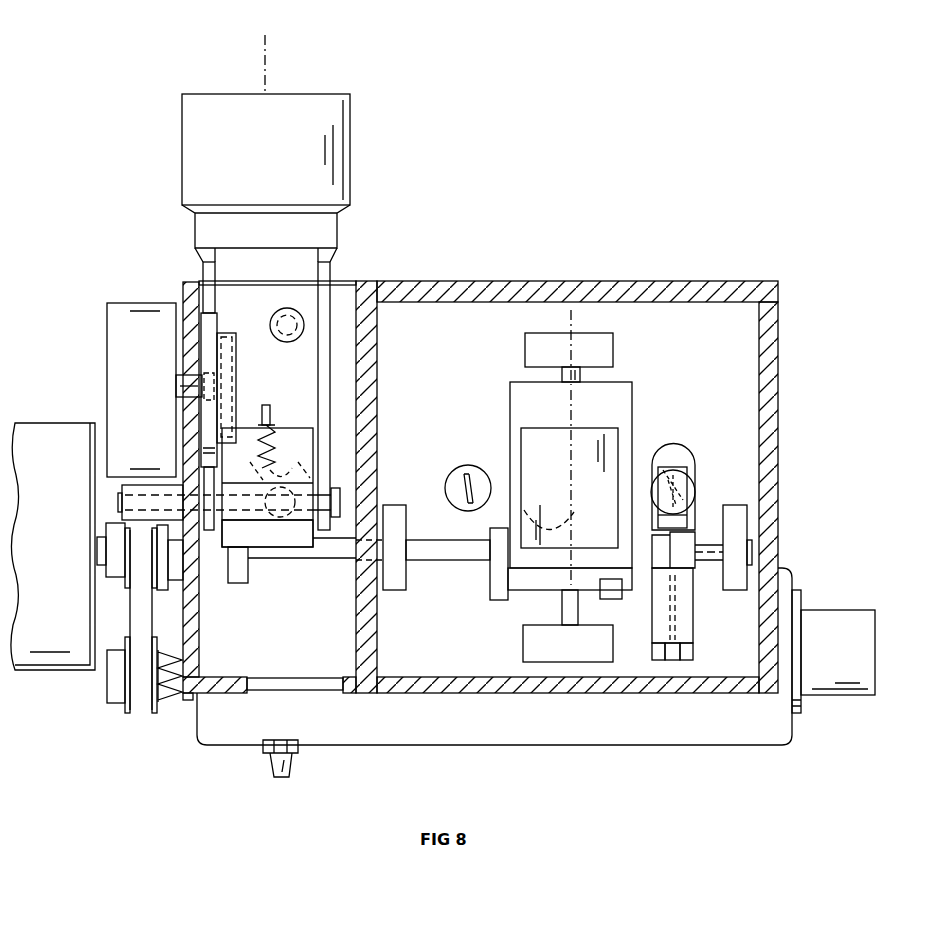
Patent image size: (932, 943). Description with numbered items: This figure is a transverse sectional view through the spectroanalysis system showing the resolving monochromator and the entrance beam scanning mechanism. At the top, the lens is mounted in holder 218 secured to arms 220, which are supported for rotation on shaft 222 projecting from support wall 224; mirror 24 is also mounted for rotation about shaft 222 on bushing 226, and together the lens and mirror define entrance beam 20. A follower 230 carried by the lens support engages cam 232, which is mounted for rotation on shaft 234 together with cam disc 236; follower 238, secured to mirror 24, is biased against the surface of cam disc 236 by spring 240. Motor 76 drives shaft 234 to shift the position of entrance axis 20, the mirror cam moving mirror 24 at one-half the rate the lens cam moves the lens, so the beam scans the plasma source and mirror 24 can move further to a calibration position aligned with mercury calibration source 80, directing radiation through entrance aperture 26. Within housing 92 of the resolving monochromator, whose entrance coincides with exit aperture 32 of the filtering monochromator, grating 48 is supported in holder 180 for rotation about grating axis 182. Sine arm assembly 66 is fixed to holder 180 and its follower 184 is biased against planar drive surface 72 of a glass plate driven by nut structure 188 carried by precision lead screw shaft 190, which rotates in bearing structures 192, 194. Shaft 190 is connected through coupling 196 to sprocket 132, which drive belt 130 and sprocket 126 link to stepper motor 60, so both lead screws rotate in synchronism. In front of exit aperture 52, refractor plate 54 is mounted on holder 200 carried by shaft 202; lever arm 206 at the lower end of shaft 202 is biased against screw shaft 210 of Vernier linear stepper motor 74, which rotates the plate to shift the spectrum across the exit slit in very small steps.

The entrance beam 20 is at (265, 82).
The holder 218 is at (352, 142).
The mercury calibration source 80 is at (284, 308).
The arms 220 is at (326, 302).
The motor 76 is at (107, 375).
The cam 232 is at (208, 355).
The cam disc 236 is at (240, 350).
The follower 238 is at (231, 385).
The shaft 234 is at (190, 388).
The follower 230 is at (206, 405).
The spring 240 is at (262, 450).
The mirror 24 is at (290, 428).
The entrance aperture 26 is at (298, 478).
The shaft 222 is at (120, 503).
The bushing 226 is at (265, 530).
The coupling 196 is at (232, 585).
The support wall 224 is at (194, 612).
The stepper motor 60 is at (40, 672).
The sprocket 132 is at (112, 577).
The drive belt 130 is at (128, 613).
The sprocket 126 is at (107, 690).
The housing 92 is at (773, 402).
The exit aperture 32 is at (462, 480).
The dispersing element 48 is at (532, 440).
The grating axis 182 is at (575, 328).
The planar sine arm drive surface 72 is at (530, 518).
The bearing structure 194 is at (394, 592).
The precision lead screw shaft 190 is at (456, 562).
The holder 180 is at (520, 578).
The follower 184 is at (560, 598).
The sine arm assembly 66 is at (619, 602).
The refractor plate 54 is at (660, 467).
The exit aperture 52 is at (680, 488).
The holder 200 is at (680, 522).
The nut structure 188 is at (685, 548).
The bearing structure 192 is at (740, 585).
The shaft 202 is at (680, 630).
The lever arm 206 is at (662, 652).
The screw shaft 210 is at (688, 655).
The stepper motor 74 is at (866, 663).